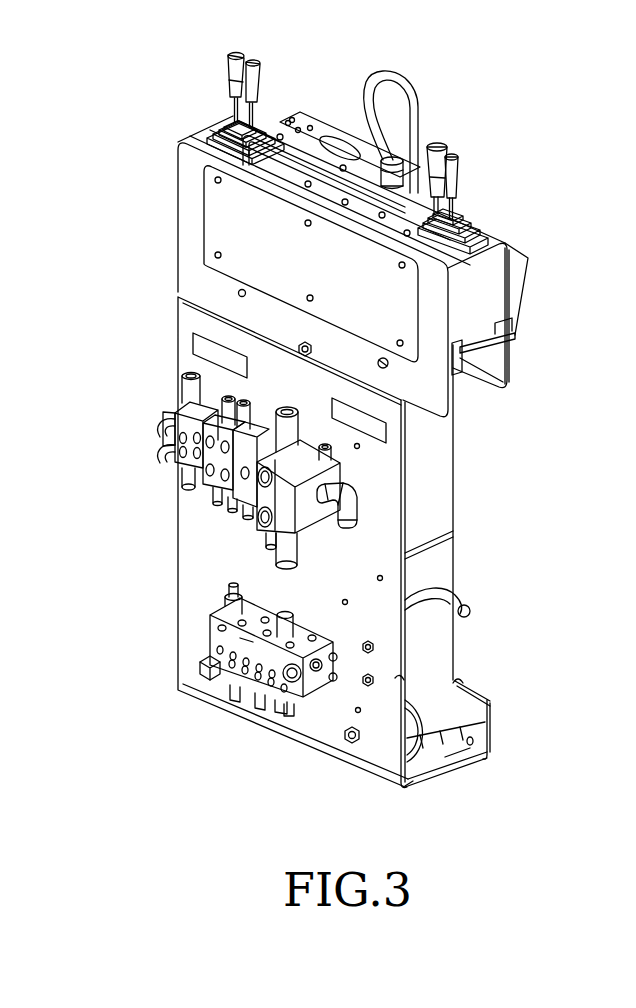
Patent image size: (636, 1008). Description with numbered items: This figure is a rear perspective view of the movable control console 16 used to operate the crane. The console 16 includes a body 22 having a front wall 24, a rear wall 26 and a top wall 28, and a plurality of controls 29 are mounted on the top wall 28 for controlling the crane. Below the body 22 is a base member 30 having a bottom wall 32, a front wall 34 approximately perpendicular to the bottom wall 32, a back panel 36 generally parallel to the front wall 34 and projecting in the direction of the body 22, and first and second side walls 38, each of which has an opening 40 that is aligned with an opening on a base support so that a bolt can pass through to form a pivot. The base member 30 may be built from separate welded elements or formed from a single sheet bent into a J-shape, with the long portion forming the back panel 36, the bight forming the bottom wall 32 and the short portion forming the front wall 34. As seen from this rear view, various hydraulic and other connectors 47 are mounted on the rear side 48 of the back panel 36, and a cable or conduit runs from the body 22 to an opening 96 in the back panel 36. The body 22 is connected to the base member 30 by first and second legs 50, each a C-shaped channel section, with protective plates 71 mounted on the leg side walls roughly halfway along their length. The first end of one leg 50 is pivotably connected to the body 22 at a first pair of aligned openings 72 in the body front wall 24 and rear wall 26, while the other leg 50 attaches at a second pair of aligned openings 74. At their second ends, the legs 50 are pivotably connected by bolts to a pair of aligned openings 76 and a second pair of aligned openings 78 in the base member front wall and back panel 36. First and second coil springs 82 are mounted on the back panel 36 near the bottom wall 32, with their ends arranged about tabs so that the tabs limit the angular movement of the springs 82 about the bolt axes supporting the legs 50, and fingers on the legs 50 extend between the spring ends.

The console 16 is at (356, 578).
The body 22 is at (365, 225).
The front wall 24 is at (505, 370).
The rear wall 26 is at (186, 171).
The top wall 28 is at (487, 232).
The controls 29 is at (258, 58).
The base member 30 is at (506, 764).
The bottom wall 32 is at (422, 786).
The front wall 34 is at (492, 727).
The back panel 36 is at (388, 650).
The side walls 38 is at (456, 750).
The opening 40 is at (473, 743).
The connectors 47 is at (190, 478).
The rear side 48 is at (205, 552).
The legs 50 is at (432, 497).
The protective plates 71 is at (445, 555).
The first pair of aligned openings 72 is at (383, 358).
The second pair of aligned openings 74 is at (238, 293).
The pair of aligned openings 76 is at (358, 748).
The second pair of aligned openings 78 is at (222, 680).
The coil springs 82 is at (412, 735).
The opening 96 is at (290, 718).